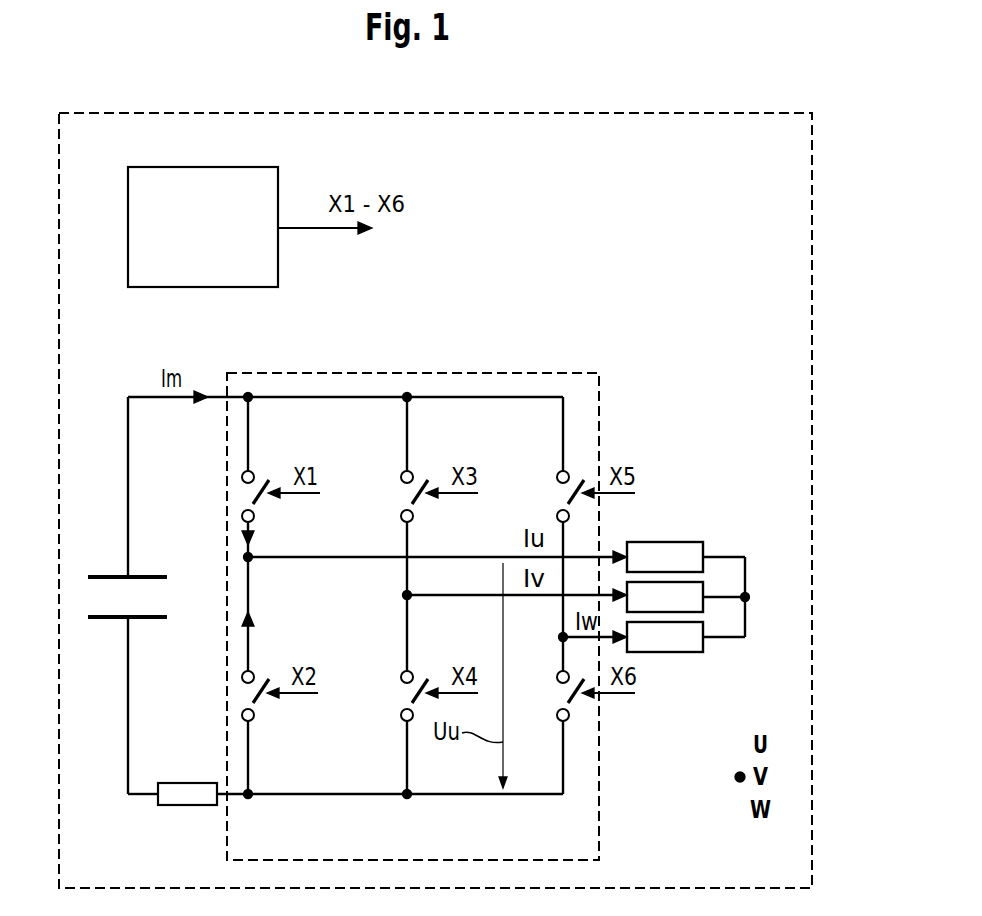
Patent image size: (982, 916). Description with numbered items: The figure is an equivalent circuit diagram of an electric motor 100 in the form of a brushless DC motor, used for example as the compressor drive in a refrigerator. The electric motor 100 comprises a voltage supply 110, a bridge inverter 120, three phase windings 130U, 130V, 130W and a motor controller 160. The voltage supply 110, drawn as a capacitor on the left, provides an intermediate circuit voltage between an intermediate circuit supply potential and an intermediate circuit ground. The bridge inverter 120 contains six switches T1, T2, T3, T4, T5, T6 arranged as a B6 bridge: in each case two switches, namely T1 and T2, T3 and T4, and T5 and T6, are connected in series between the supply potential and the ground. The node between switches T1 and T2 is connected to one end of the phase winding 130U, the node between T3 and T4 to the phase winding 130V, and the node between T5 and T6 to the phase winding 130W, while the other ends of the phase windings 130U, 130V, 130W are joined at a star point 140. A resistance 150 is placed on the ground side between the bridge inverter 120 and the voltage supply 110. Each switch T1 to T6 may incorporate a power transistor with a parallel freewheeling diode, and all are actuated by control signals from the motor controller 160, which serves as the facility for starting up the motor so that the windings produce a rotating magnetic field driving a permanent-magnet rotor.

The electric motor 100 is at (602, 113).
The voltage supply 110 is at (147, 595).
The bridge inverter 120 is at (362, 373).
The phase winding 130U is at (663, 552).
The phase winding 130V is at (693, 588).
The phase winding 130W is at (682, 643).
The star point 140 is at (745, 599).
The resistance 150 is at (190, 794).
The motor controller 160 is at (222, 241).
The switch T1 is at (254, 500).
The switch T2 is at (254, 700).
The switch T3 is at (413, 500).
The switch T4 is at (413, 700).
The switch T5 is at (569, 500).
The switch T6 is at (569, 700).